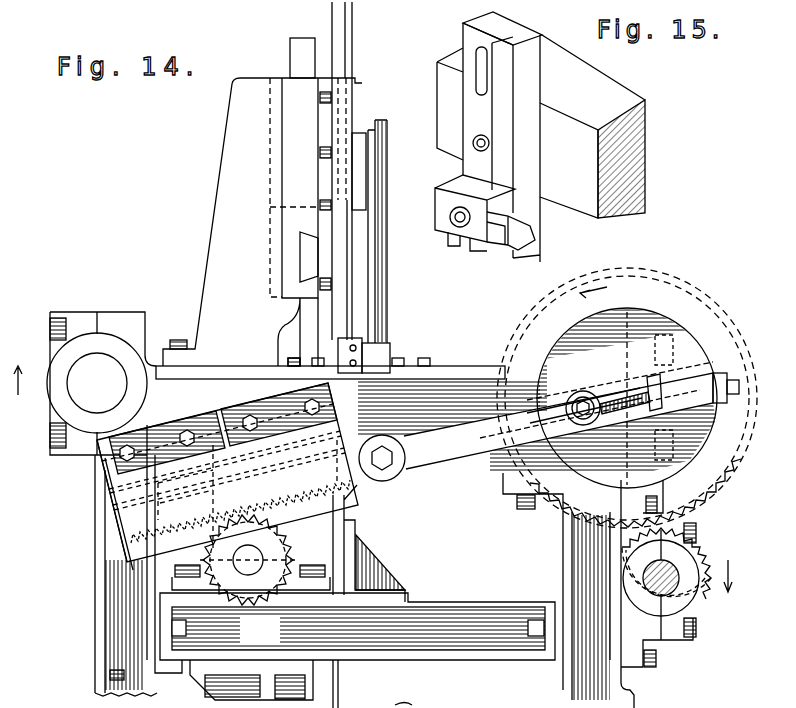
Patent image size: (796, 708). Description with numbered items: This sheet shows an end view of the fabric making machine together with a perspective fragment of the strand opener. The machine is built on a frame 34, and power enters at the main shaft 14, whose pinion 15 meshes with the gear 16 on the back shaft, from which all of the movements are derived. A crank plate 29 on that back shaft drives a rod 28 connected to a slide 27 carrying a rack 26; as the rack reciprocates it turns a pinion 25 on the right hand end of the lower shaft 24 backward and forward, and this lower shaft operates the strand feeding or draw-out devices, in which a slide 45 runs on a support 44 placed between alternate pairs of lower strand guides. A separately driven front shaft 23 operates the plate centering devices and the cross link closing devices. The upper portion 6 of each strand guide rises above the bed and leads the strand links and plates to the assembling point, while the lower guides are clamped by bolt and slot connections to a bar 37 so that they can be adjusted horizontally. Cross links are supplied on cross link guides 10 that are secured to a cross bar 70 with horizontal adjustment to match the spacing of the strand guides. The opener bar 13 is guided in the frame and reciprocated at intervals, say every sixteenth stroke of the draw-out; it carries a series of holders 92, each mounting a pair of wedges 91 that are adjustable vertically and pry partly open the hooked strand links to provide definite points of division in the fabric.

In FIG. 14, the upper portion of strand guide 6 is at (340, 22).
In FIG. 14, the frame 34 is at (297, 82).
In FIG. 14, the cross link guide 10 is at (382, 122).
In FIG. 14, the cross bar 70 is at (358, 180).
In FIG. 14, the opener bar 13 is at (305, 244).
In FIG. 15, the opener bar 13 is at (628, 168).
In FIG. 14, the front shaft 23 is at (73, 383).
In FIG. 14, the slide 27 is at (110, 512).
In FIG. 14, the rack 26 is at (118, 553).
In FIG. 14, the lower shaft 24 is at (262, 562).
In FIG. 14, the bar 37 is at (370, 577).
In FIG. 14, the pinion 25 is at (250, 606).
In FIG. 14, the rod 28 is at (549, 421).
In FIG. 14, the crank plate 29 is at (632, 318).
In FIG. 14, the gear 16 is at (698, 490).
In FIG. 14, the pinion 15 is at (696, 564).
In FIG. 14, the main shaft 14 is at (676, 590).
In FIG. 14, the support 44 is at (338, 688).
In FIG. 14, the slide 45 is at (401, 701).
In FIG. 15, the holder 92 is at (513, 33).
In FIG. 15, the wedge 91 is at (520, 246).